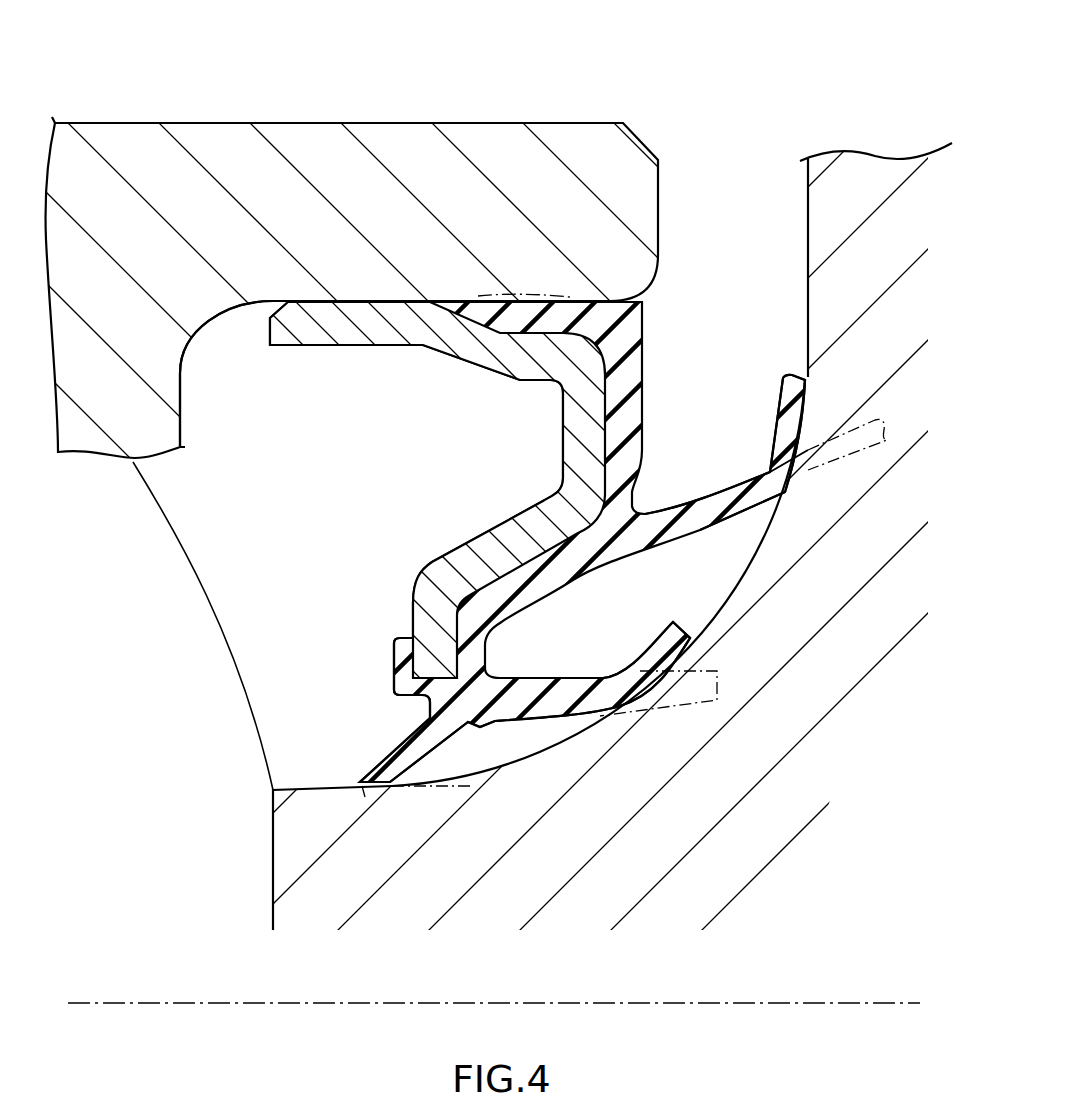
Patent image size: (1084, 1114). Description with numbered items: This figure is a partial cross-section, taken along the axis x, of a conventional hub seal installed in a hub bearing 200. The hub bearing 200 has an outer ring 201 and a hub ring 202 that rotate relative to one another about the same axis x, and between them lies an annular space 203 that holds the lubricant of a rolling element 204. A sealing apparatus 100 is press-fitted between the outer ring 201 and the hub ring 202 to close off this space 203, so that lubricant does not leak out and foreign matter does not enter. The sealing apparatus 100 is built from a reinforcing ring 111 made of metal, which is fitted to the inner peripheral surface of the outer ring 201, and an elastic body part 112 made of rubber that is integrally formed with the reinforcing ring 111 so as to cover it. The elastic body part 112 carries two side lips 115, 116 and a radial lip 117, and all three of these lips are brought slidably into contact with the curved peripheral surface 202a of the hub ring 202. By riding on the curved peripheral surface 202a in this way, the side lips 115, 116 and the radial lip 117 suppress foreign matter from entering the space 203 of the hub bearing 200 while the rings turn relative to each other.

The sealing apparatus 100 is at (542, 557).
The reinforcing ring 111 is at (325, 330).
The elastic body part 112 is at (630, 376).
The side lip 115 is at (720, 500).
The side lip 116 is at (532, 688).
The radial lip 117 is at (413, 756).
The hub bearing 200 is at (542, 557).
The outer ring 201 is at (293, 140).
The hub ring 202 is at (542, 500).
The curved peripheral surface 202a is at (722, 606).
The space 203 is at (380, 461).
The rolling element 204 is at (214, 622).
The axis x is at (883, 1001).